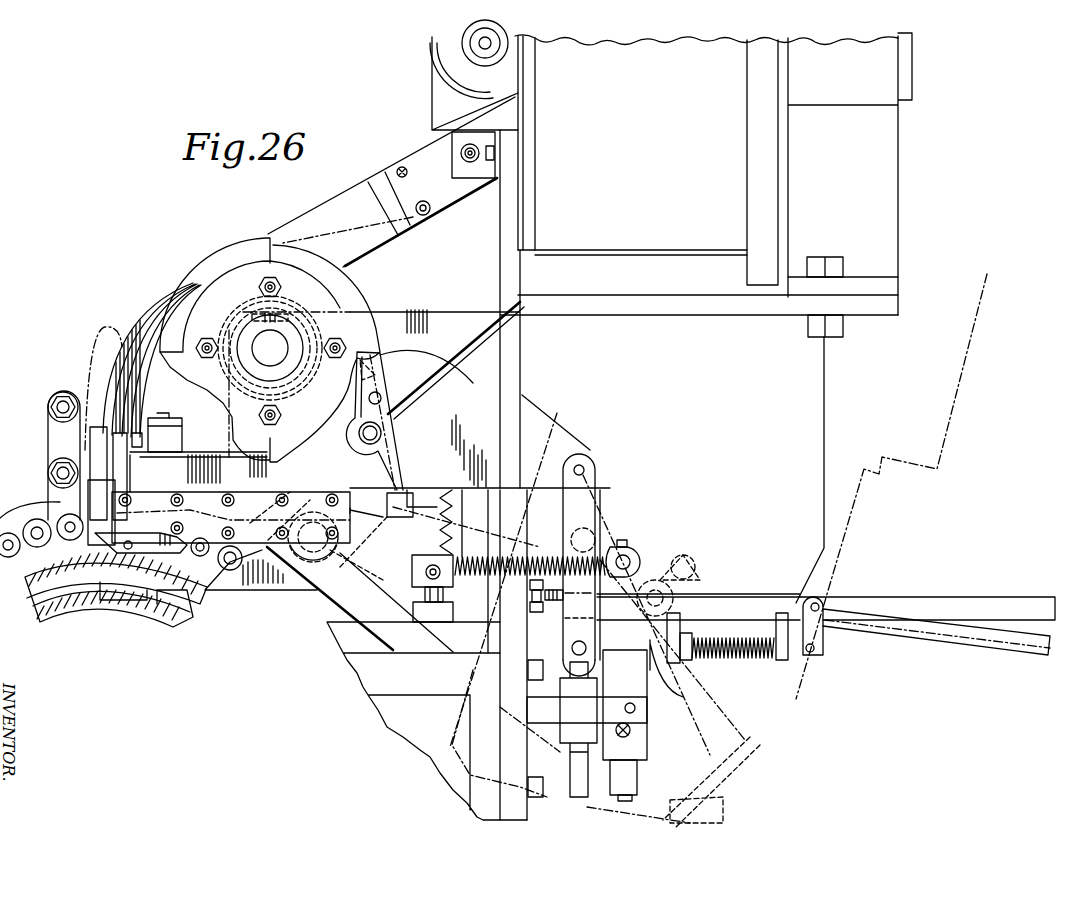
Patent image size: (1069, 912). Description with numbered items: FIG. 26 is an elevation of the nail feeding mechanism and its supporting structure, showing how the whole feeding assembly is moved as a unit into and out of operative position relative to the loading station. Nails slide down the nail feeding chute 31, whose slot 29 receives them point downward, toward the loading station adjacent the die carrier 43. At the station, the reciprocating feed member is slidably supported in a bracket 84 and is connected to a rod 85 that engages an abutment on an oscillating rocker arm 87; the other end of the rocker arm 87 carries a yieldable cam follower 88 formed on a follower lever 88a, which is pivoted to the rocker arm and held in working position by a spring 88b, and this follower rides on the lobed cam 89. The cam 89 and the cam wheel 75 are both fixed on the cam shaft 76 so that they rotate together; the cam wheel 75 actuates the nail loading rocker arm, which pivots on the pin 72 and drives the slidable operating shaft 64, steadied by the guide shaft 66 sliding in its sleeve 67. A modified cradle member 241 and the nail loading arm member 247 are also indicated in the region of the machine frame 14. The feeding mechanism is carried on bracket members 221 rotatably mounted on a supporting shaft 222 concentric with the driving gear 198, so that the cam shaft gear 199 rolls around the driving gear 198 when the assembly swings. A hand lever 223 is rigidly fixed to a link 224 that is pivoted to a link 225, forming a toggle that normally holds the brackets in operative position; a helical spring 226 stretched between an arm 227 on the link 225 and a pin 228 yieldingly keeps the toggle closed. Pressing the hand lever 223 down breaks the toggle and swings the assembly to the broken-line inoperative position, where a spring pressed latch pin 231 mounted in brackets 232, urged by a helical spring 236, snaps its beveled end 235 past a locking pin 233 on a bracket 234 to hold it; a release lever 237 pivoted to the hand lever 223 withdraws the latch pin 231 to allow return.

The frame 14 is at (30, 513).
The slot 29 is at (125, 333).
The nail feeding chute 31 is at (165, 318).
The die carrier 43 is at (58, 612).
The operating shaft 64 is at (52, 468).
The guide shaft 66 is at (50, 406).
The sleeve 67 is at (66, 393).
The pin 72 is at (163, 418).
The cam wheel 75 is at (220, 258).
The cam shaft 76 is at (276, 342).
The bracket 84 is at (242, 492).
The rod 85 is at (388, 520).
The rocker arm 87 is at (392, 428).
The cam follower 88 is at (383, 354).
The follower lever 88a is at (416, 369).
The spring 88b is at (456, 394).
The cam 89 is at (222, 290).
The driving gear 198 is at (271, 361).
The cam shaft gear 199 is at (258, 376).
The bracket members 221 is at (418, 322).
The supporting shaft 222 is at (320, 560).
The hand lever 223 is at (932, 596).
The link 224 is at (570, 610).
The link 225 is at (597, 503).
The helical spring 226 is at (472, 607).
The arm 227 is at (640, 550).
The pin 228 is at (412, 572).
The latch pin 231 is at (805, 662).
The brackets 232 is at (678, 655).
The locking pin 233 is at (640, 708).
The bracket 234 is at (583, 725).
The beveled end 235 is at (665, 660).
The helical spring 236 is at (730, 636).
The release lever 237 is at (948, 636).
The cradle member 241 is at (128, 550).
The nail loading arm member 247 is at (88, 538).